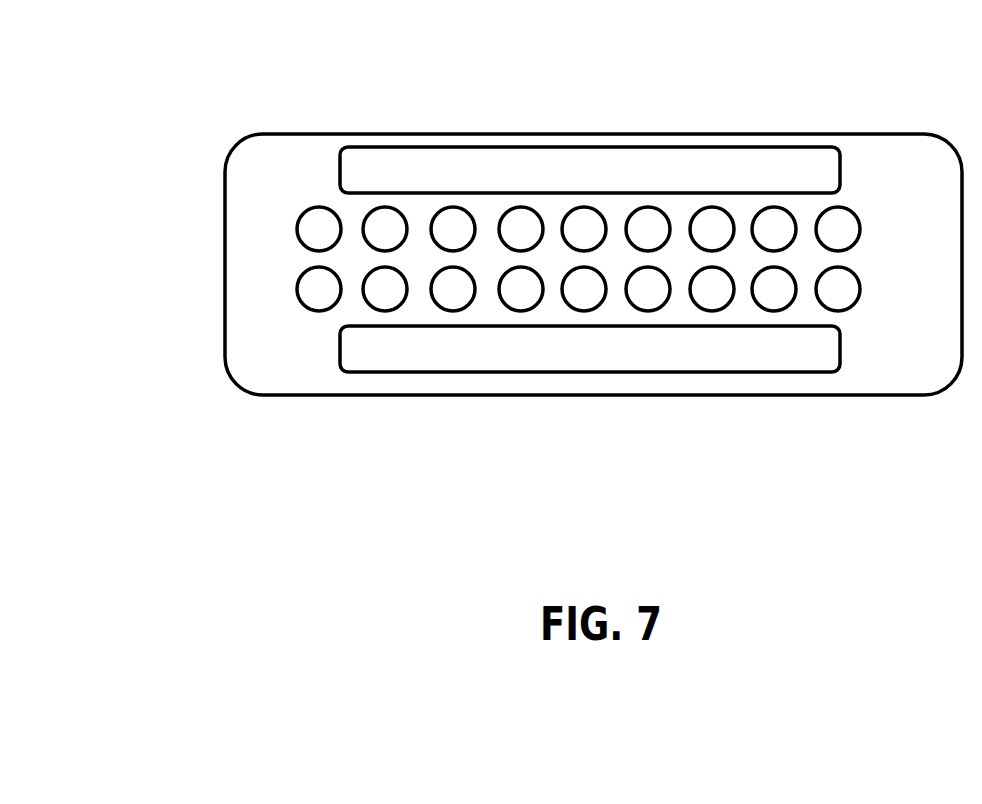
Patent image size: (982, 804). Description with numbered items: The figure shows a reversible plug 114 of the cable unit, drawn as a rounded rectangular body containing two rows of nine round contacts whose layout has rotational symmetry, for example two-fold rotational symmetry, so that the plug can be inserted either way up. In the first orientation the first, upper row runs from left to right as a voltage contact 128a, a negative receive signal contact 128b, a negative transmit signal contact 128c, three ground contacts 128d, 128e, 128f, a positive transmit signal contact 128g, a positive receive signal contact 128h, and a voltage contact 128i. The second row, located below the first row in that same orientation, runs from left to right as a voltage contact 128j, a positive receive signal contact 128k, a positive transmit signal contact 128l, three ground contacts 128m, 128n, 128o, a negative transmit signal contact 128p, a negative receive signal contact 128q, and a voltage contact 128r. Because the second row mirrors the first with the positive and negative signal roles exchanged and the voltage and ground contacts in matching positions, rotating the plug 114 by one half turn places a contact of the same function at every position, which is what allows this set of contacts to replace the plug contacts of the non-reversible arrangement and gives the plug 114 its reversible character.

The plug 114 is at (224, 215).
The voltage contact 128a is at (319, 207).
The negative receive signal contact 128b is at (385, 207).
The negative transmit signal contact 128c is at (453, 207).
The ground contact 128d is at (521, 207).
The ground contact 128e is at (584, 207).
The ground contact 128f is at (648, 207).
The positive transmit signal contact 128g is at (712, 207).
The positive receive signal contact 128h is at (774, 207).
The voltage contact 128i is at (838, 207).
The voltage contact 128j is at (319, 311).
The positive receive signal contact 128k is at (385, 311).
The positive transmit signal contact 128l is at (453, 311).
The ground contact 128m is at (521, 311).
The ground contact 128n is at (584, 311).
The ground contact 128o is at (648, 311).
The negative transmit signal contact 128p is at (712, 311).
The negative receive signal contact 128q is at (774, 311).
The voltage contact 128r is at (838, 311).